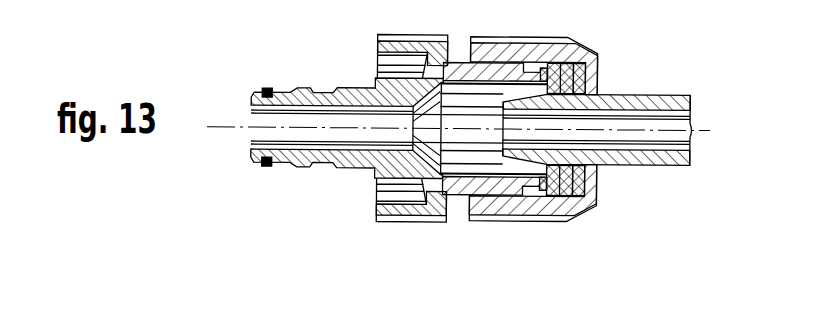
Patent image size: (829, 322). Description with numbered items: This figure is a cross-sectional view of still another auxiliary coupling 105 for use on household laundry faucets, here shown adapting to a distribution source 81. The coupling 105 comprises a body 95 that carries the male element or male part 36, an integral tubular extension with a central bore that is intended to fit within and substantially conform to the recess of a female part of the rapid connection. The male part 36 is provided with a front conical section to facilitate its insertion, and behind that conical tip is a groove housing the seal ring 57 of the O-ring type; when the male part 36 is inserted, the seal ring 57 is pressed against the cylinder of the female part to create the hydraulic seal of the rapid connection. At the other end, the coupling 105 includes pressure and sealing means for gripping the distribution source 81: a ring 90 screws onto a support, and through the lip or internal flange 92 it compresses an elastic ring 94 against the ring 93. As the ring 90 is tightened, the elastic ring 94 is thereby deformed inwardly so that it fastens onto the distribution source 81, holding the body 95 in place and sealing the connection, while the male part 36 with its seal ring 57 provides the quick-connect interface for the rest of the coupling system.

The male part 36 is at (320, 164).
The seal ring 57 is at (264, 162).
The distribution source 81 is at (672, 160).
The ring 90 is at (570, 208).
The internal flange 92 is at (593, 184).
The ring 93 is at (533, 195).
The elastic ring 94 is at (597, 65).
The body 95 is at (409, 221).
The coupling 105 is at (551, 175).